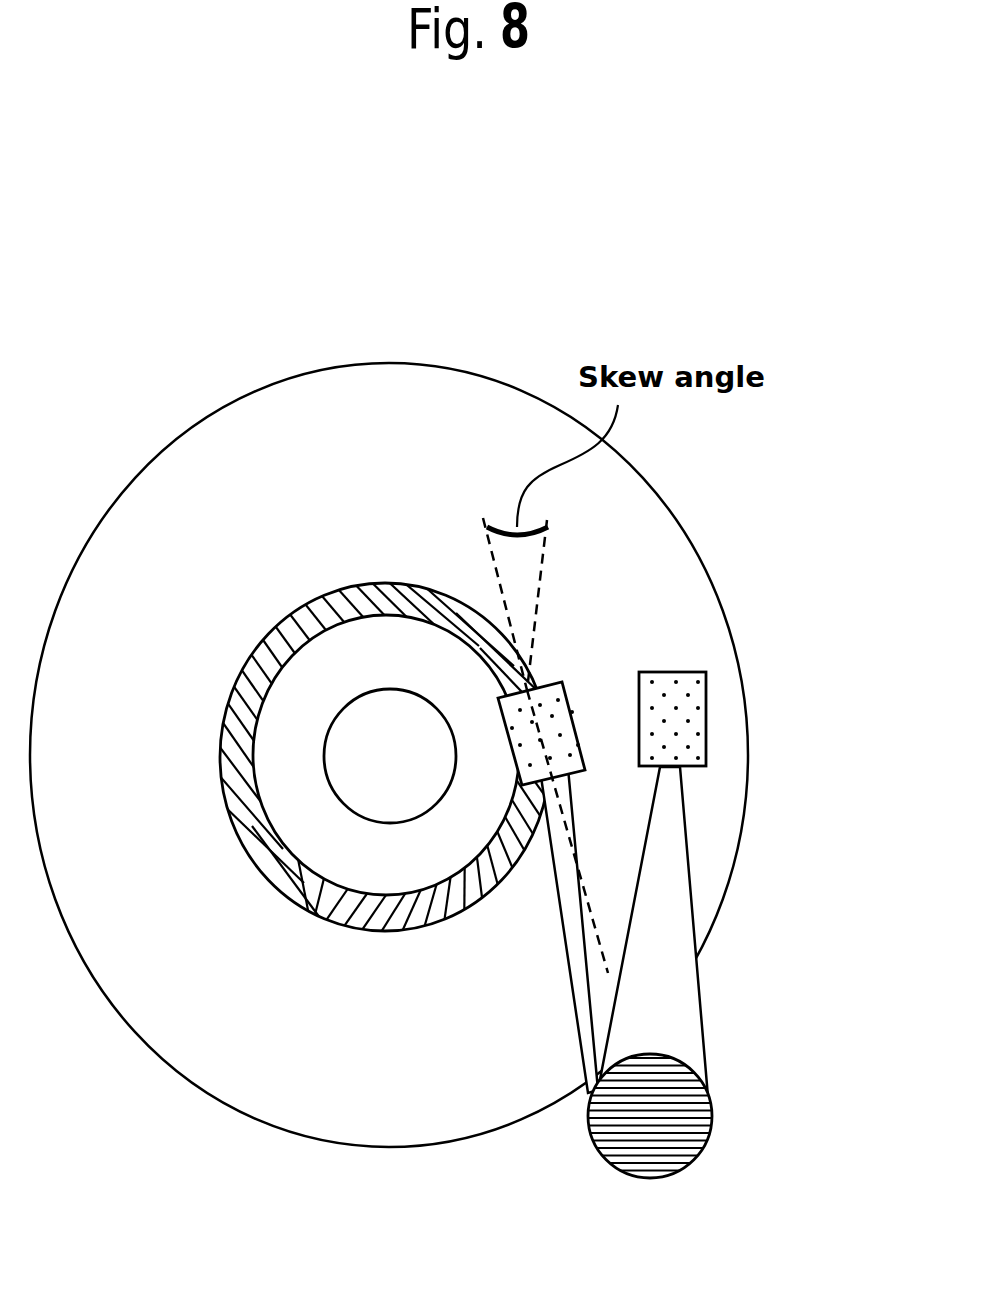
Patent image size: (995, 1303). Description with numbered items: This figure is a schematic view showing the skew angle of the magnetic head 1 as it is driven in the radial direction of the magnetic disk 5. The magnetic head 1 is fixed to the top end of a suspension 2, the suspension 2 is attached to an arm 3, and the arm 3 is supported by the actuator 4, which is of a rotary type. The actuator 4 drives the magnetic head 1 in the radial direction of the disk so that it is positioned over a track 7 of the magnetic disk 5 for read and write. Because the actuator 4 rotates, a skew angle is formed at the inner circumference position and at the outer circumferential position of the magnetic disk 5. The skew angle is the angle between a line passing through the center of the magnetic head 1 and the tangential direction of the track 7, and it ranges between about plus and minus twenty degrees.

The magnetic head 1 is at (697, 707).
The suspension 2 is at (673, 987).
The arm 3 is at (673, 987).
The actuator 4 is at (700, 1128).
The magnetic disk 5 is at (671, 552).
The track 7 is at (288, 878).